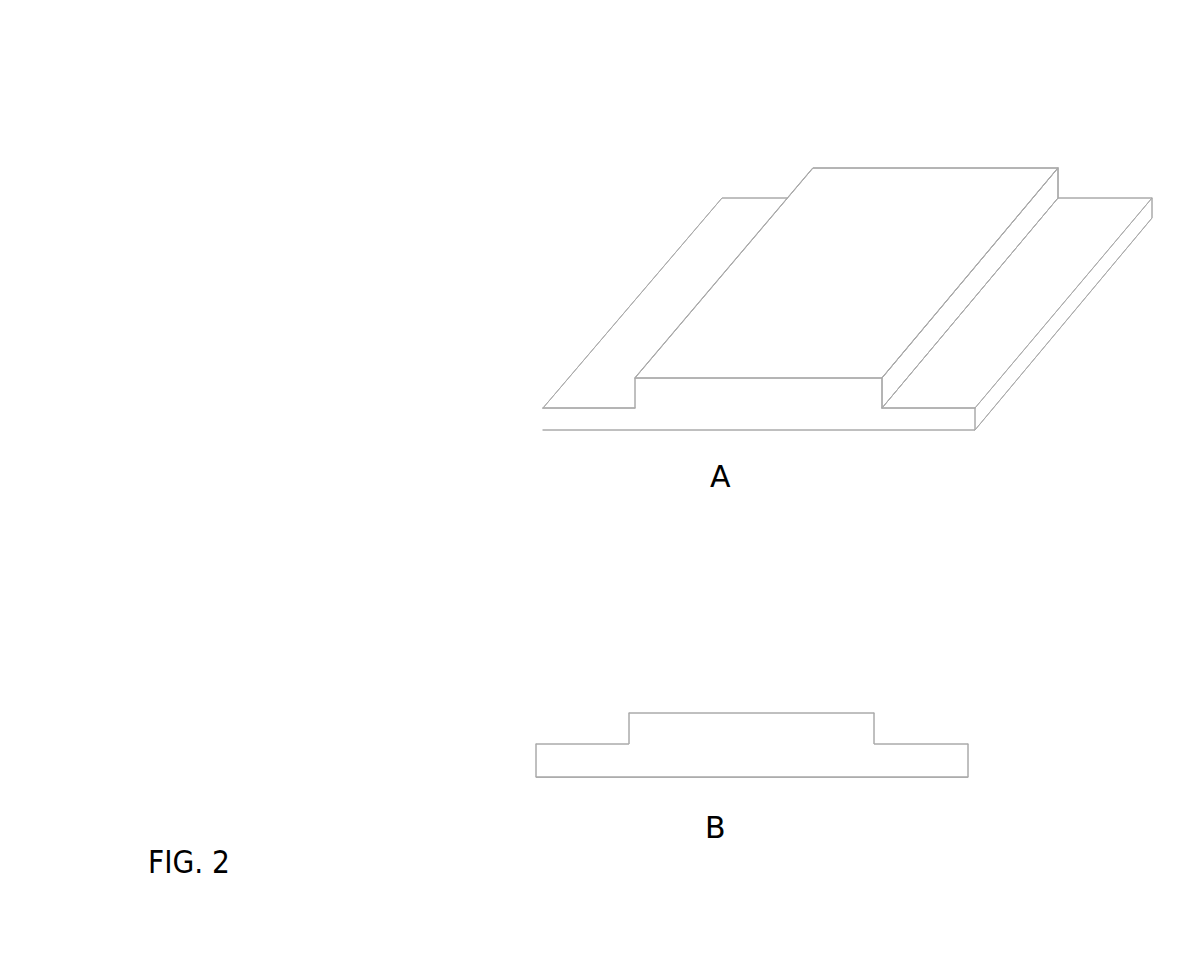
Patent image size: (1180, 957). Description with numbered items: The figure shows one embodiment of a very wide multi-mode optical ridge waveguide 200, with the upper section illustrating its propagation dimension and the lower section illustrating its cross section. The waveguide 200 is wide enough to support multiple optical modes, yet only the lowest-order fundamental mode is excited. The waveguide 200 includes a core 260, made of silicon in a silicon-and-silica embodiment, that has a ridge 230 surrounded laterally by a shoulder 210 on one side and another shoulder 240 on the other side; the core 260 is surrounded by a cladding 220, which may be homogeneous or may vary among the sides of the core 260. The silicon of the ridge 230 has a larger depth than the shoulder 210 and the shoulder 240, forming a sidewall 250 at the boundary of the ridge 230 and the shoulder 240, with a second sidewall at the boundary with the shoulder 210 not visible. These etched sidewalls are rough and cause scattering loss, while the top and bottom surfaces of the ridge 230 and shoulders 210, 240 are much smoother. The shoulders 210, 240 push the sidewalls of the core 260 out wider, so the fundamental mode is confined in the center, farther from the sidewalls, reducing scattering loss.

The very wide multi-mode optical ridge waveguide 200 is at (297, 101).
The shoulder 210 is at (552, 422).
The cladding 220 is at (583, 727).
The ridge 230 is at (780, 352).
The shoulder 240 is at (952, 383).
The sidewall 250 is at (1043, 198).
The core 260 is at (875, 152).